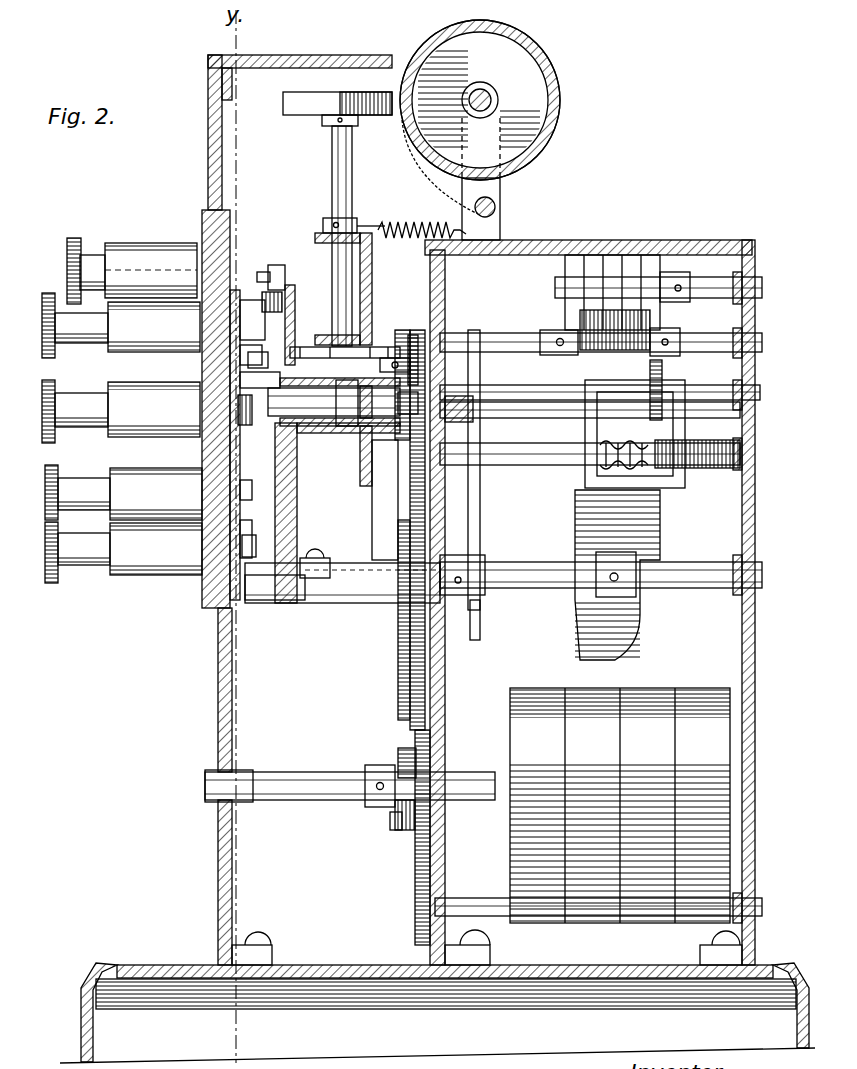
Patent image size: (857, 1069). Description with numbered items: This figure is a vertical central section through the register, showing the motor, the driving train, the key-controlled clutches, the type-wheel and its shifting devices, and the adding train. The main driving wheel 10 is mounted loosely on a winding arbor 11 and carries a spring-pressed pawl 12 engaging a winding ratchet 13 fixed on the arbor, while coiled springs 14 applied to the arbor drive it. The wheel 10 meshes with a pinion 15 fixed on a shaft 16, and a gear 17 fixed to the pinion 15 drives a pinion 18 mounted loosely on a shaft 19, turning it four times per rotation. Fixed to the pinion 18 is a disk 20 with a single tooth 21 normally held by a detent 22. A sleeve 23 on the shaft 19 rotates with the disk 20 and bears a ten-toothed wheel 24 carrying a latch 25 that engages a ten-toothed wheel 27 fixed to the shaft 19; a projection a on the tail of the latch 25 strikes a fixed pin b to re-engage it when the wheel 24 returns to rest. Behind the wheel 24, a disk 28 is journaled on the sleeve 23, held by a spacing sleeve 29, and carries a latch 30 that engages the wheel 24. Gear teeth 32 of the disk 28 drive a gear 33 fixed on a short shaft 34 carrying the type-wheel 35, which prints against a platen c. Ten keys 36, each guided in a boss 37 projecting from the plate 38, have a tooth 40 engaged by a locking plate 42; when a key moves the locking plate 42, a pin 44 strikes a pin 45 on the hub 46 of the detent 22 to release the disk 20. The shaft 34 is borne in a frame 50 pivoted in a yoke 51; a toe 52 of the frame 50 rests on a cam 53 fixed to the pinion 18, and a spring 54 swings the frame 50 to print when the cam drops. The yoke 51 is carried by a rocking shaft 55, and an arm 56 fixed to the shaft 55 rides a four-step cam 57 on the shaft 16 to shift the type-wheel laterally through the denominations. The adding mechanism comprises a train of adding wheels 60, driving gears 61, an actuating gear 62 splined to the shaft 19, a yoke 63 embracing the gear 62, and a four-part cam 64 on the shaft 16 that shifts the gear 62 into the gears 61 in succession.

The main driving wheel 10 is at (415, 890).
The winding arbor 11 is at (280, 778).
The spring-pressed pawl 12 is at (395, 828).
The winding ratchet 13 is at (398, 752).
The coiled springs 14 is at (620, 805).
The pinion 15 is at (410, 605).
The shaft 16 is at (512, 575).
The gear 17 is at (400, 655).
The pinion 18 is at (372, 470).
The shaft 19 is at (522, 400).
The disk 20 is at (375, 418).
The tooth 21 is at (395, 432).
The detent 22 is at (385, 530).
The sleeve 23 is at (318, 427).
The ten-toothed wheel 24 is at (235, 490).
The latch 25 is at (240, 355).
The ten-toothed wheel 27 is at (240, 440).
The disk 28 is at (295, 300).
The spacing sleeve 29 is at (346, 428).
The latch 30 is at (280, 265).
The gear teeth 32 is at (297, 470).
The gear 33 is at (318, 345).
The short shaft 34 is at (332, 178).
The type-wheel 35 is at (300, 116).
The keys 36 is at (68, 268).
The boss 37 is at (128, 252).
The plate 38 is at (210, 575).
The tooth 40 is at (262, 270).
The locking plate 42 is at (262, 492).
The pin 44 is at (252, 530).
The pin 45 is at (252, 552).
The hub 46 is at (345, 580).
The frame 50 is at (372, 275).
The yoke 51 is at (410, 338).
The toe 52 is at (397, 328).
The cam 53 is at (470, 418).
The spring 54 is at (395, 220).
The shaft 55 is at (535, 350).
The arm 56 is at (480, 494).
The cam 57 is at (480, 635).
The adding wheels 60 is at (565, 268).
The driving gears 61 is at (585, 352).
The actuating gear 62 is at (660, 395).
The yoke 63 is at (588, 428).
The four-part cam 64 is at (660, 532).
The projection a is at (248, 325).
The fixed pin b is at (245, 360).
The platen c is at (425, 45).